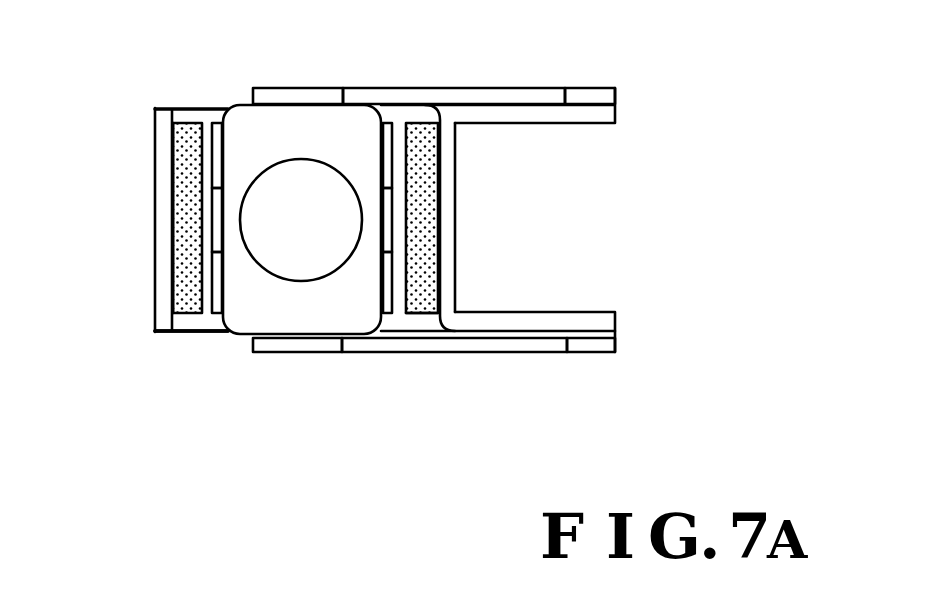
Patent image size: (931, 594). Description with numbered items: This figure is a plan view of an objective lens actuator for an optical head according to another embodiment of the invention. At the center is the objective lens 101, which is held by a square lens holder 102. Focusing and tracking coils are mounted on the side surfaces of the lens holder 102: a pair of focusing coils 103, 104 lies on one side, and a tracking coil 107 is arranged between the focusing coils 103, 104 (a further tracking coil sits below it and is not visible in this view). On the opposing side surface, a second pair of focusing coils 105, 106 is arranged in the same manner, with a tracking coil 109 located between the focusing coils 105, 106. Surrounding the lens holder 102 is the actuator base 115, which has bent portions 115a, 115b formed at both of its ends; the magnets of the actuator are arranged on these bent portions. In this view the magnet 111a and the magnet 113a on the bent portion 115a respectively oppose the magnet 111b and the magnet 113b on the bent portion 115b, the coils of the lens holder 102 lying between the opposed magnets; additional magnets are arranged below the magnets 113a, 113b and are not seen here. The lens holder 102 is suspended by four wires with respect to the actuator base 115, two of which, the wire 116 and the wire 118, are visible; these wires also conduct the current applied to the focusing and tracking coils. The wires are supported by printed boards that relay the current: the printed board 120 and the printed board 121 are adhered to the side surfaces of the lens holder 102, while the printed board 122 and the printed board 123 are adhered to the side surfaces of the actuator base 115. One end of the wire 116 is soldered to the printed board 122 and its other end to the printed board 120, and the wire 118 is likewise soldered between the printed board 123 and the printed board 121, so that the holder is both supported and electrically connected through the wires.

The objective lens 101 is at (280, 158).
The lens holder 102 is at (240, 338).
The focusing coil 103 is at (212, 287).
The focusing coil 104 is at (213, 147).
The focusing coil 105 is at (393, 289).
The focusing coil 106 is at (393, 155).
The tracking coil 107 is at (202, 191).
The tracking coil 109 is at (393, 208).
The magnet 111a is at (173, 242).
The magnet 111b is at (414, 313).
The magnet 113a is at (190, 107).
The magnet 113b is at (422, 123).
The actuator base 115 is at (188, 337).
The bent portion 115a is at (155, 207).
The bent portion 115b is at (448, 245).
The wire 116 is at (505, 353).
The wire 118 is at (480, 87).
The printed board 120 is at (303, 355).
The printed board 121 is at (308, 88).
The printed board 122 is at (588, 353).
The printed board 123 is at (587, 87).